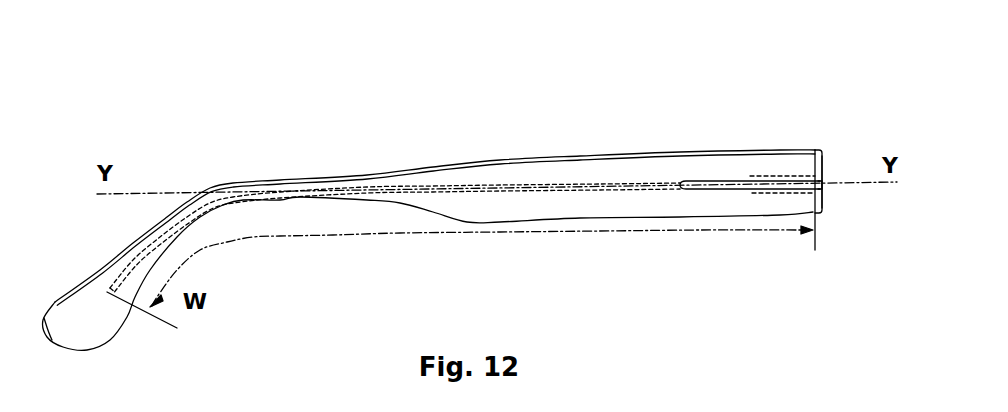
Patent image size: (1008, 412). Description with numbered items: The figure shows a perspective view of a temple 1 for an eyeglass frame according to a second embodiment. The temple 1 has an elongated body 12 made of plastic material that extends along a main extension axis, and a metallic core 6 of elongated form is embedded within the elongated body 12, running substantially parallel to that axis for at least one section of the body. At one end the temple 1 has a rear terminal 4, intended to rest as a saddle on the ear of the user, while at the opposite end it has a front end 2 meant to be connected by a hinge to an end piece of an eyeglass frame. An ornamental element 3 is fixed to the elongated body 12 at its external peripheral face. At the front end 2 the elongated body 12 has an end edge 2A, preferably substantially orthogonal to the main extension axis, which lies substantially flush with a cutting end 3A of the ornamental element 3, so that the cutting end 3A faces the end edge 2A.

The temple 1 is at (248, 135).
The front end 2 is at (825, 215).
The end edge 2A is at (822, 163).
The ornamental element 3 is at (722, 183).
The cutting end 3A is at (819, 183).
The rear terminal 4 is at (83, 323).
The metallic core 6 is at (562, 182).
The elongated body 12 is at (437, 180).